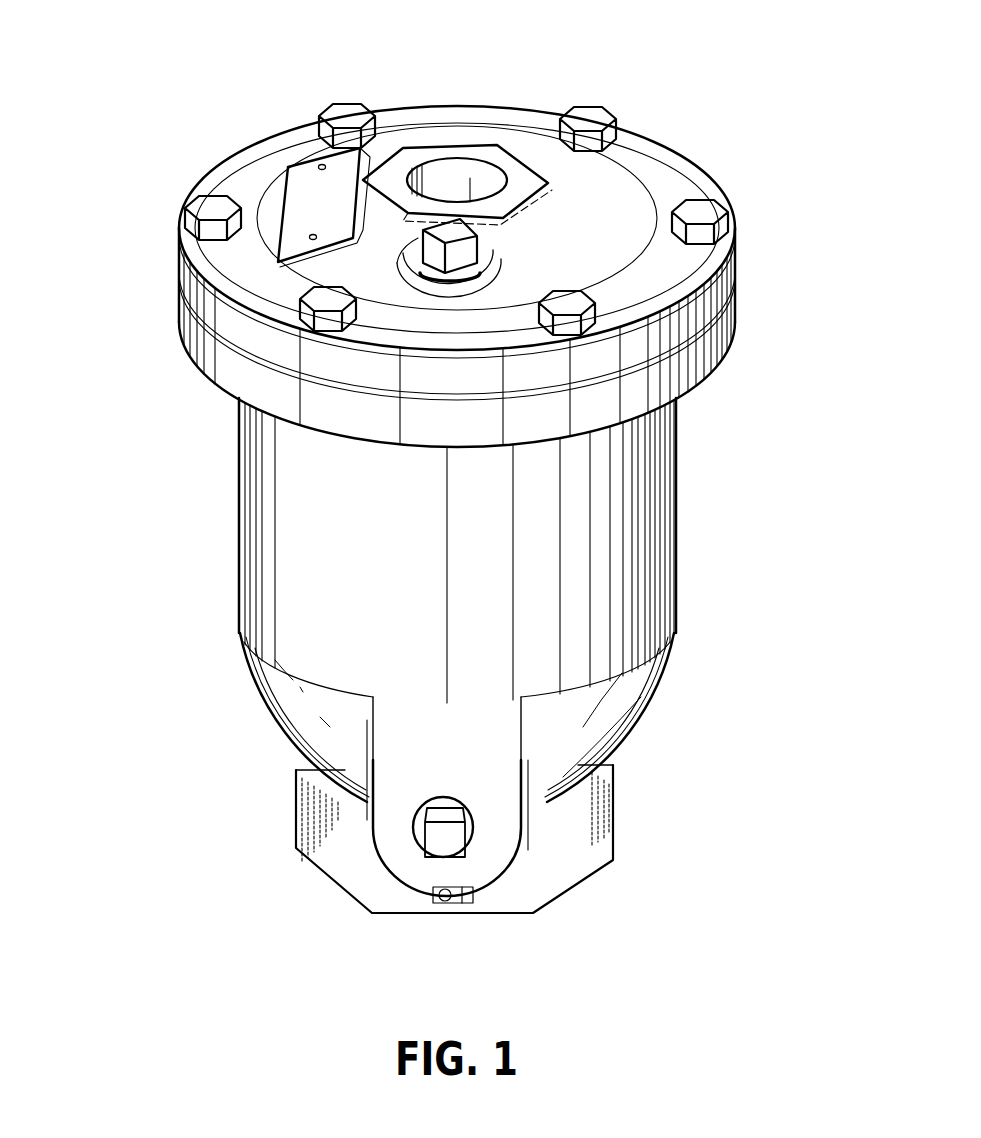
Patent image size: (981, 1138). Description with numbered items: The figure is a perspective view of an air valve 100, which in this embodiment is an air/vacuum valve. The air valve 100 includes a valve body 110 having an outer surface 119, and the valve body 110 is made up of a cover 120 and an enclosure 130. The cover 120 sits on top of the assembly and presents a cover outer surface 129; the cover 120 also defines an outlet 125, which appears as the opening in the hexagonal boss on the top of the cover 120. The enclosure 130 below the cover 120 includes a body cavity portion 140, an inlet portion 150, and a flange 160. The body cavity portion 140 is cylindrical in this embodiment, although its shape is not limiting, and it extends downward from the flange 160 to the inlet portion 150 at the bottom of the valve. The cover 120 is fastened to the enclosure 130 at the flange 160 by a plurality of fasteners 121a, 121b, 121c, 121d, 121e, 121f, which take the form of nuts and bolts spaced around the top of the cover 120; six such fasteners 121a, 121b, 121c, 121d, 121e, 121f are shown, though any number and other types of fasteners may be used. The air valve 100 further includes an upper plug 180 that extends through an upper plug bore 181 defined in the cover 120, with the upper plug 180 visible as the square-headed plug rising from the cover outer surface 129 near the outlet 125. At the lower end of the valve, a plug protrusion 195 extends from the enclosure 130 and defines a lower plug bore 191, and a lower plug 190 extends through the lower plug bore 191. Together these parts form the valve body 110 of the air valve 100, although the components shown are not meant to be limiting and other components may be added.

The air valve 100 is at (729, 53).
The valve body 110 is at (643, 589).
The outer surface 119 is at (364, 606).
The cover 120 is at (655, 338).
The fastener 121a is at (346, 104).
The fastener 121b is at (212, 198).
The fastener 121c is at (302, 302).
The fastener 121d is at (718, 282).
The fastener 121e is at (724, 216).
The fastener 121f is at (604, 108).
The outlet 125 is at (470, 160).
The cover outer surface 129 is at (600, 263).
The enclosure 130 is at (678, 527).
The body cavity portion 140 is at (273, 558).
The inlet portion 150 is at (343, 830).
The flange 160 is at (662, 395).
The upper plug 180 is at (465, 255).
The upper plug bore 181 is at (452, 258).
The lower plug 190 is at (440, 845).
The lower plug bore 191 is at (476, 828).
The plug protrusion 195 is at (550, 806).